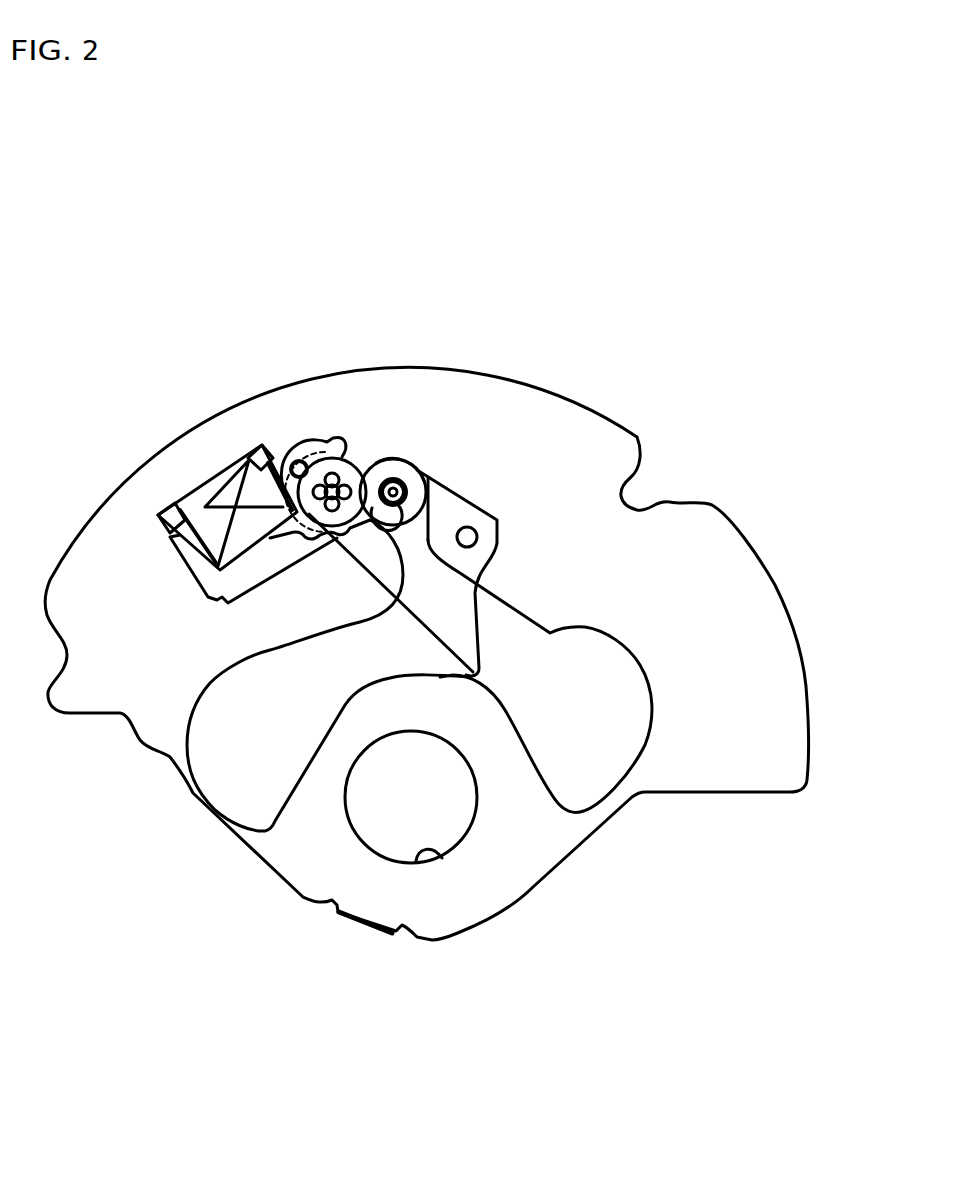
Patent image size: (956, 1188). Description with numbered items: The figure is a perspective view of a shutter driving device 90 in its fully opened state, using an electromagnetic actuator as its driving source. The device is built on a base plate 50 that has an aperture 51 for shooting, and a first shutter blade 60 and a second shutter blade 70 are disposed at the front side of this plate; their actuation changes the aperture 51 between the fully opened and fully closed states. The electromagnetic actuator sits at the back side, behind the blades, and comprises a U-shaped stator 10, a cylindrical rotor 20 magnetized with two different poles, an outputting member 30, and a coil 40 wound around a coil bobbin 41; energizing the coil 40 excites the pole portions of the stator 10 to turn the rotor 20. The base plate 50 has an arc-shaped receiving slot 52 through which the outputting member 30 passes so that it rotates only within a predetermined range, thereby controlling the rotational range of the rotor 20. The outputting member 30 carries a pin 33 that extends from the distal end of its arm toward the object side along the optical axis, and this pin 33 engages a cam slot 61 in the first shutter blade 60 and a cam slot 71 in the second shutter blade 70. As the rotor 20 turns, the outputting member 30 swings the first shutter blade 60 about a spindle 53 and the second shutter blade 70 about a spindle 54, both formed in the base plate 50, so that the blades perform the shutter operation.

The shutter driving device 90 is at (687, 366).
The base plate 50 is at (750, 593).
The aperture 51 is at (443, 852).
The spindle 54 is at (477, 540).
The second shutter blade 70 is at (230, 783).
The first shutter blade 60 is at (598, 763).
The cam slot 61 is at (427, 483).
The receiving slot 52 is at (400, 523).
The stator 10 is at (207, 573).
The coil 40 is at (208, 484).
The coil bobbin 41 is at (250, 447).
The spindle 53 is at (305, 440).
The rotor 20 is at (358, 462).
The outputting member 30 is at (386, 458).
The pin 33 is at (420, 470).
The cam slot 71 is at (400, 463).